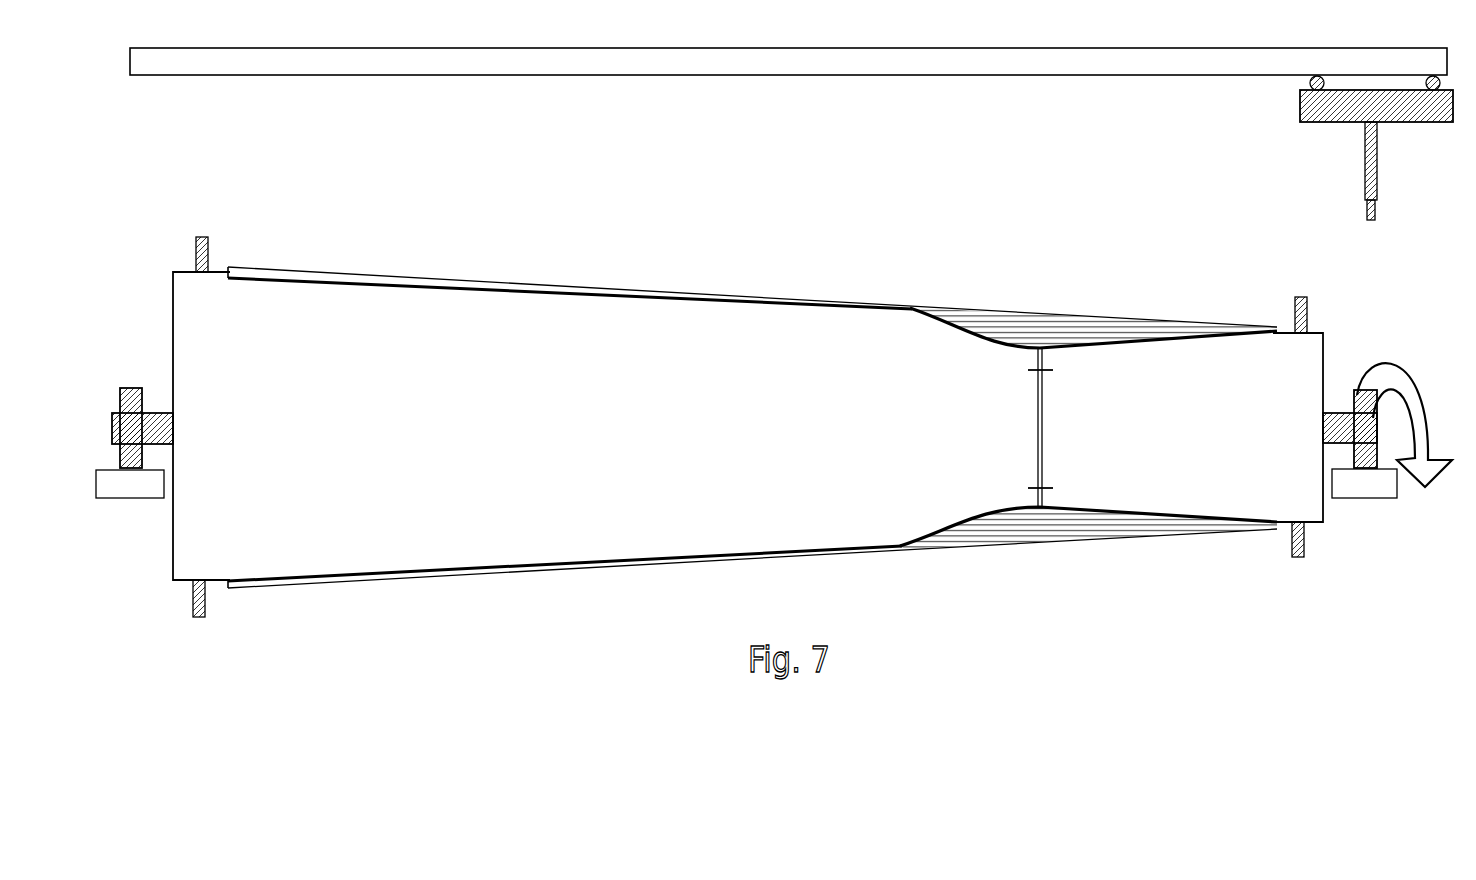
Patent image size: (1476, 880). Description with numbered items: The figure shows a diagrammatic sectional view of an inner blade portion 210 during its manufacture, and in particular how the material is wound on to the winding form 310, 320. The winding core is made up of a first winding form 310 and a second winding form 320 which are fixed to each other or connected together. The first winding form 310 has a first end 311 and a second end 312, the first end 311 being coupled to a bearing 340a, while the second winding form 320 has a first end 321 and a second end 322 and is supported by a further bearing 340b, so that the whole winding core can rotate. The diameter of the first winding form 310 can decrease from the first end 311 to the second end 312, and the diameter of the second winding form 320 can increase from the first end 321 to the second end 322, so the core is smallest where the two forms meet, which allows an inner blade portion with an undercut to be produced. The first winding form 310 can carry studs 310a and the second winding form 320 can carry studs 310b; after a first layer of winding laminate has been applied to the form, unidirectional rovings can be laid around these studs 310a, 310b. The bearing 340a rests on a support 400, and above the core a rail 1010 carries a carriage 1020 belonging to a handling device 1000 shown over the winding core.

The handling device 1000 is at (1452, 123).
The guide rail 1010 is at (695, 60).
The carriage 1020 is at (1300, 122).
The inner blade portion 210 is at (1028, 333).
The first winding form 310 is at (598, 455).
The studs 310a is at (203, 237).
The studs 310b is at (1302, 296).
The first end 311 is at (173, 347).
The second end 312 is at (1037, 392).
The second winding form 320 is at (1147, 487).
The first end 321 is at (1045, 425).
The second end 322 is at (1325, 353).
The bearing 340a is at (128, 388).
The further bearing 340b is at (1372, 420).
The support 400 is at (131, 487).